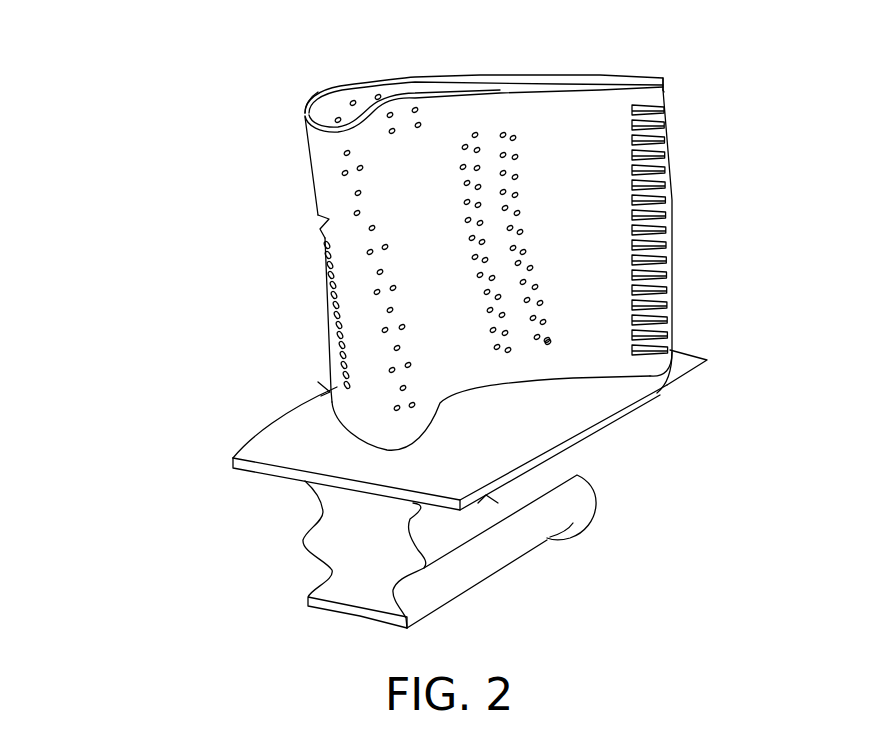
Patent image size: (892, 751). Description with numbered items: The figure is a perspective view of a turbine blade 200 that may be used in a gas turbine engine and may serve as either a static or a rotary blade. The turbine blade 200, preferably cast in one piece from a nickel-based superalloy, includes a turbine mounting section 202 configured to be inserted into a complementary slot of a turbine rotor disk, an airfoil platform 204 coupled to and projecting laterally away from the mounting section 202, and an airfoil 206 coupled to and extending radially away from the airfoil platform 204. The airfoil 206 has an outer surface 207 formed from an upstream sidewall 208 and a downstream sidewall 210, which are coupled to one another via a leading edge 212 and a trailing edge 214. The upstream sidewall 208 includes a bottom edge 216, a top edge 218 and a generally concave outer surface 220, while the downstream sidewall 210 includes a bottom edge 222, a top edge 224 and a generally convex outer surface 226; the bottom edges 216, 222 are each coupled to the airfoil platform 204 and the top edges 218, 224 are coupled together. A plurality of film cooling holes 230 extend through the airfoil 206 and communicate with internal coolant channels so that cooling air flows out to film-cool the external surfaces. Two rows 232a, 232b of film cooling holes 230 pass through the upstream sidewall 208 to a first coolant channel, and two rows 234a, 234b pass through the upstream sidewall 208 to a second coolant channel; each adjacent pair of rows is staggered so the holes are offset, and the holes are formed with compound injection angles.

The turbine blade 200 is at (190, 158).
The turbine mounting section 202 is at (493, 562).
The airfoil platform 204 is at (260, 440).
The airfoil 206 is at (665, 92).
The outer surface 207 is at (350, 230).
The upstream sidewall 208 is at (552, 96).
The downstream sidewall 210 is at (305, 115).
The leading edge 212 is at (307, 174).
The trailing edge 214 is at (668, 153).
The bottom edge 216 is at (513, 380).
The top edge 218 is at (463, 92).
The outer surface 220 is at (608, 221).
The bottom edge 222 is at (323, 388).
The top edge 224 is at (393, 80).
The outer surface 226 is at (327, 86).
The film cooling holes 230 is at (376, 205).
The row of film cooling holes 232a is at (563, 348).
The row of film cooling holes 232b is at (552, 334).
The row of film cooling holes 234a is at (523, 359).
The row of film cooling holes 234b is at (482, 347).